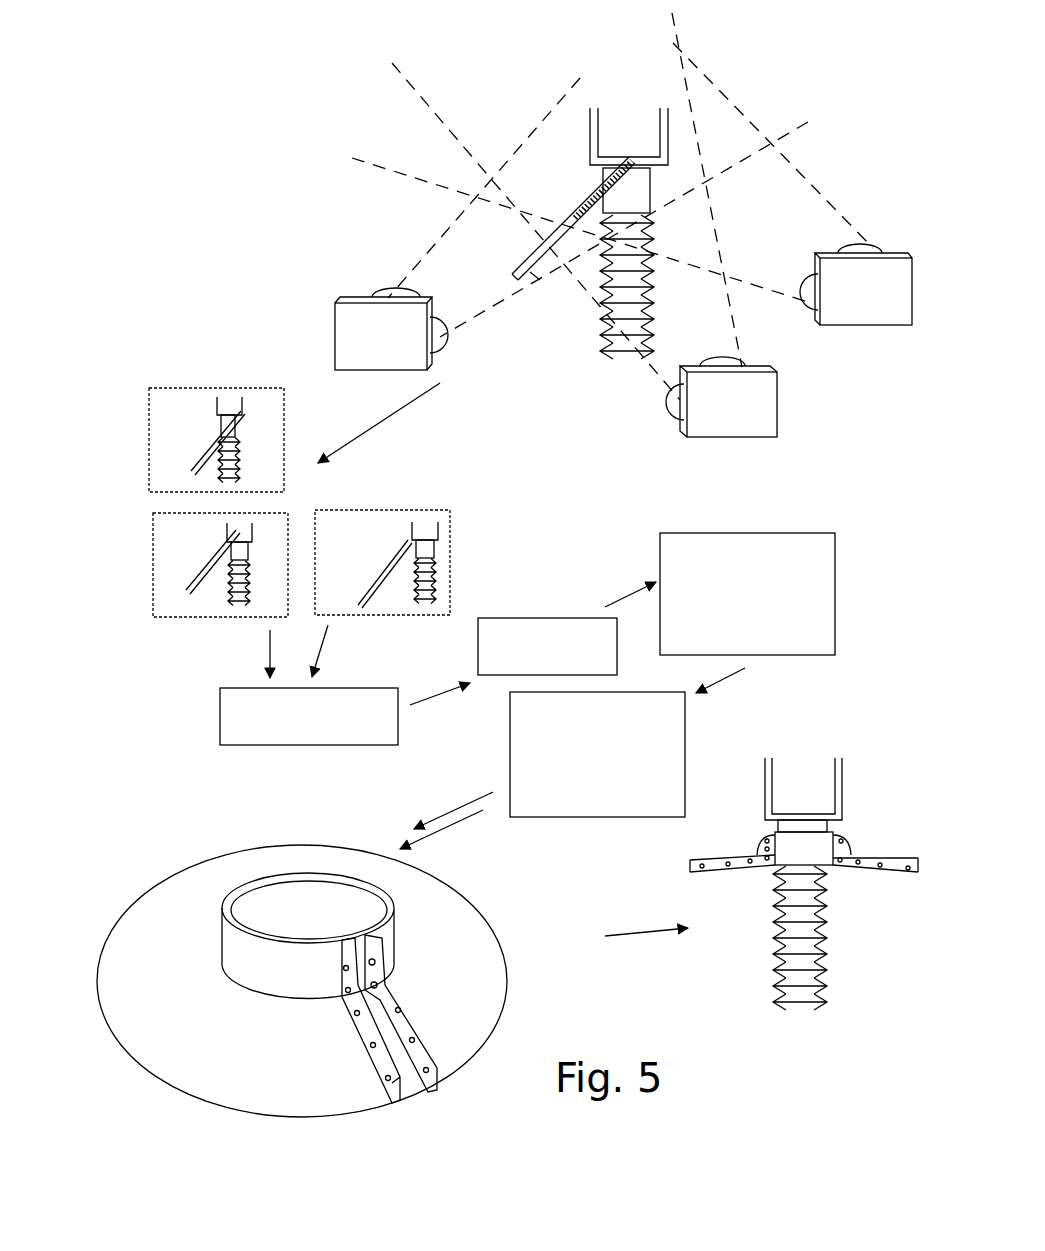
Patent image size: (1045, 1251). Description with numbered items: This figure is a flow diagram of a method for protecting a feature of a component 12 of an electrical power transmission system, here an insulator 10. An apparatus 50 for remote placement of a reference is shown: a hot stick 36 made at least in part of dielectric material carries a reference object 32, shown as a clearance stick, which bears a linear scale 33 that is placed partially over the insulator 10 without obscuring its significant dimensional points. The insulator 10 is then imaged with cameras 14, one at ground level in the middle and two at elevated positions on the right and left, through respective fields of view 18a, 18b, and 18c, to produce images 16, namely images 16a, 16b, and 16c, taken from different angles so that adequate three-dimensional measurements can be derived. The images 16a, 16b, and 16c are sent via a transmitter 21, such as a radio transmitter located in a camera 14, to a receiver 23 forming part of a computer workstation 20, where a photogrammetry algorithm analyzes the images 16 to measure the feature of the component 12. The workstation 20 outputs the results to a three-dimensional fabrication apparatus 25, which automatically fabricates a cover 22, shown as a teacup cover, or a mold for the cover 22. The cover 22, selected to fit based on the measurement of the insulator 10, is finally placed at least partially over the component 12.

The apparatus 50 is at (513, 60).
The insulator 10 is at (688, 170).
The component 12 is at (652, 253).
The camera 14 is at (335, 320).
The images 16 is at (183, 243).
The image 16a is at (186, 388).
The image 16b is at (192, 618).
The image 16c is at (408, 616).
The field of view 18a is at (796, 132).
The field of view 18b is at (418, 94).
The field of view 18c is at (352, 158).
The computer workstation 20 is at (837, 603).
The transmitter 21 is at (256, 747).
The cover 22 is at (310, 838).
The receiver 23 is at (550, 618).
The 3-dimensional fabrication apparatus 25 is at (582, 818).
The reference object 32 is at (548, 243).
The linear scale 33 is at (620, 190).
The hot stick 36 is at (531, 272).